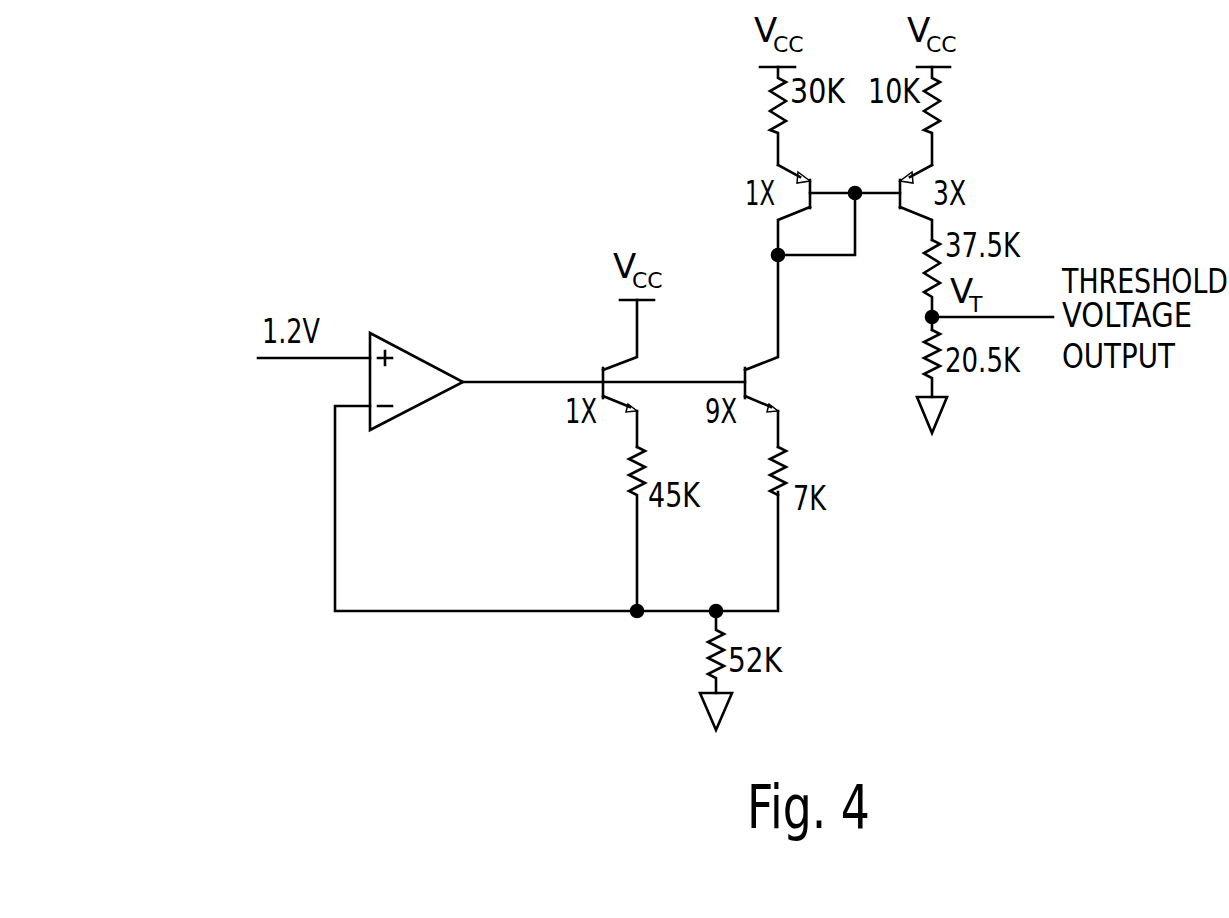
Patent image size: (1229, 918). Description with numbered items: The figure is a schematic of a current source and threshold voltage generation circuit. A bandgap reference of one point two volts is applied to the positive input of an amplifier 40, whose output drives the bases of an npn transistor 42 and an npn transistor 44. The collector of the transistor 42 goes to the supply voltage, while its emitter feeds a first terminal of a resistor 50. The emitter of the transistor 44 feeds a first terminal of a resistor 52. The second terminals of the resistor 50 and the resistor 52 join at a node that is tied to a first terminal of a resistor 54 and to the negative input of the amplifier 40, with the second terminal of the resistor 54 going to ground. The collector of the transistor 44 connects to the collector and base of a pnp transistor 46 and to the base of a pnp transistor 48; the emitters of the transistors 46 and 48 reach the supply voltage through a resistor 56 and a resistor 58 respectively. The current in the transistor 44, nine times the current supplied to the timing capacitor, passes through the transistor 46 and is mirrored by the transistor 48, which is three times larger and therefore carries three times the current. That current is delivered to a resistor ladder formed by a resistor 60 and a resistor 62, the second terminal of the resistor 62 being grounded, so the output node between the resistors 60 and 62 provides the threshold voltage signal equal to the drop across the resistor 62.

The amplifier 40 is at (425, 404).
The npn transistor 42 is at (622, 362).
The npn transistor 44 is at (763, 362).
The pnp transistor 46 is at (788, 170).
The pnp transistor 48 is at (922, 170).
The resistor 50 is at (628, 472).
The resistor 52 is at (770, 470).
The resistor 54 is at (712, 652).
The resistor 56 is at (770, 110).
The resistor 58 is at (938, 122).
The resistor 60 is at (928, 302).
The resistor 62 is at (925, 367).